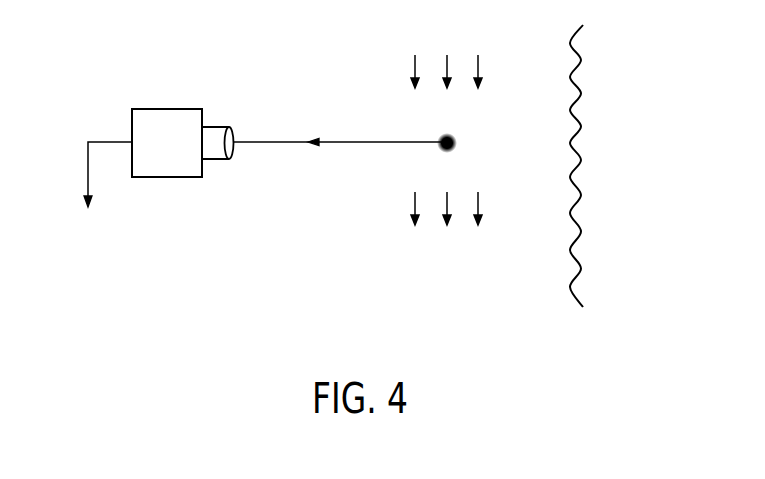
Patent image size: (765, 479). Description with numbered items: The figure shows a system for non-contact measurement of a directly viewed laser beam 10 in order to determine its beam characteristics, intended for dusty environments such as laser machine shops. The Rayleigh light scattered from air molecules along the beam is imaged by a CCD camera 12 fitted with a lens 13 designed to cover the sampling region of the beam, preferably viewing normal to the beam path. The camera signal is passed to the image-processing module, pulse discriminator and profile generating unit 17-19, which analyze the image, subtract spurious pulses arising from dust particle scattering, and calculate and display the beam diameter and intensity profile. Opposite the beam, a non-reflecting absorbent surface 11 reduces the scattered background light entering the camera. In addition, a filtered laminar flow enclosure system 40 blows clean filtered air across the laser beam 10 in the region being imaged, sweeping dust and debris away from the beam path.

The laser beam 10 is at (458, 141).
The non-reflecting absorbent surfaces 11 is at (606, 166).
The CCD camera 12 is at (170, 177).
The lens 13 is at (238, 131).
The image-processing module, pulse discriminator and profile generating unit 17-19 is at (94, 190).
The filtered laminar flow enclosure system 40 is at (446, 145).